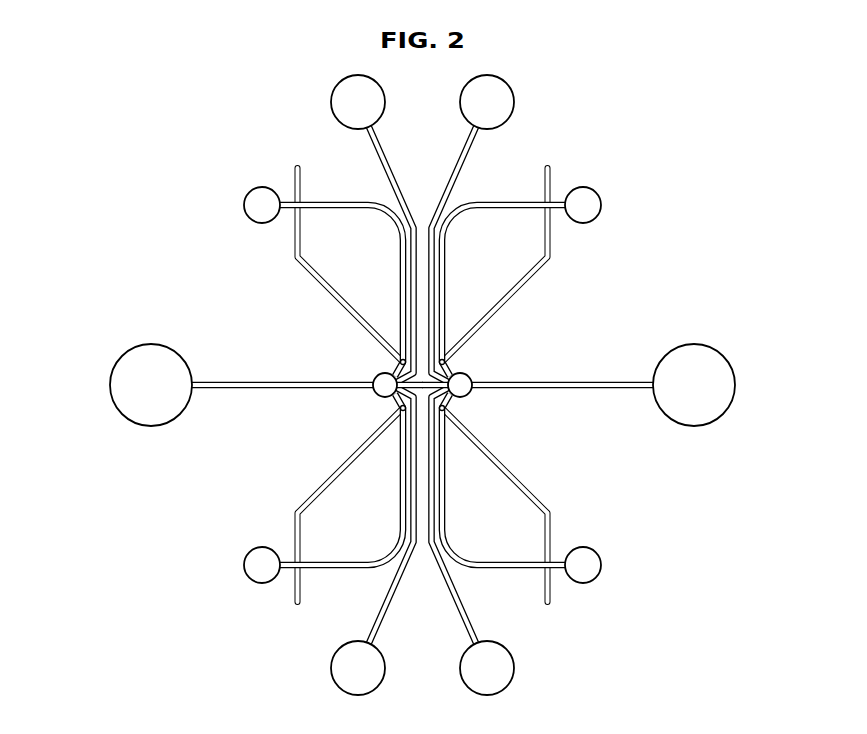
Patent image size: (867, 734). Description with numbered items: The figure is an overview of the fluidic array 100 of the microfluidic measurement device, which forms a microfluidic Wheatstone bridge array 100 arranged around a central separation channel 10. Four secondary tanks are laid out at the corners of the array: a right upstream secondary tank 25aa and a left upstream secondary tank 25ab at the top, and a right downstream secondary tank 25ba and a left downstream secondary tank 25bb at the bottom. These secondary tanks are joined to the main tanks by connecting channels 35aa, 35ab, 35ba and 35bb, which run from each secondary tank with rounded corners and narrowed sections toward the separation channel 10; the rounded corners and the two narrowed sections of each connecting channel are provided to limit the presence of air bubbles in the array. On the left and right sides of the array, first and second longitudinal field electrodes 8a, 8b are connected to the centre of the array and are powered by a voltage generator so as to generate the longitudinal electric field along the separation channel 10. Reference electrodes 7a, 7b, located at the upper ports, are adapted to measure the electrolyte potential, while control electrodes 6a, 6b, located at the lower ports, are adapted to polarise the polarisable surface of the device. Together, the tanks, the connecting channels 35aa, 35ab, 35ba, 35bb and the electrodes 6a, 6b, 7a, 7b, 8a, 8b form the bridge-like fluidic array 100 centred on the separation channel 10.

The fluidic array 100 is at (422, 385).
The separation channel 10 is at (424, 377).
The reference electrode 7a is at (347, 130).
The reference electrode 7b is at (498, 130).
The control electrode 6a is at (347, 640).
The control electrode 6b is at (498, 640).
The first longitudinal field electrode 8a is at (137, 347).
The second longitudinal field electrode 8b is at (708, 347).
The right upstream secondary tank 25aa is at (252, 229).
The left upstream secondary tank 25ab is at (593, 229).
The right downstream secondary tank 25ba is at (252, 541).
The left downstream secondary tank 25bb is at (593, 541).
The connecting channel 35aa is at (334, 210).
The connecting channel 35ab is at (511, 210).
The connecting channel 35ba is at (334, 560).
The connecting channel 35bb is at (511, 560).